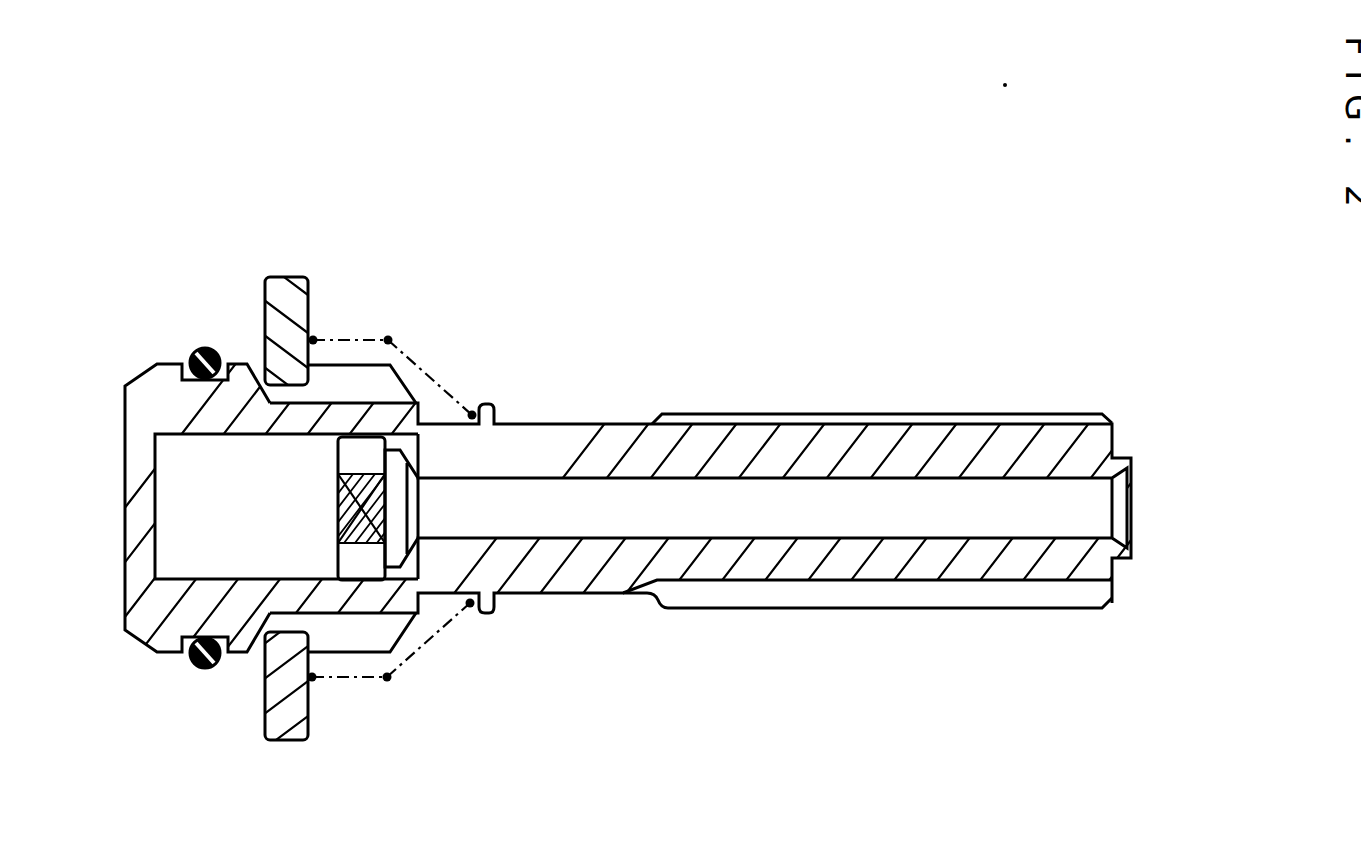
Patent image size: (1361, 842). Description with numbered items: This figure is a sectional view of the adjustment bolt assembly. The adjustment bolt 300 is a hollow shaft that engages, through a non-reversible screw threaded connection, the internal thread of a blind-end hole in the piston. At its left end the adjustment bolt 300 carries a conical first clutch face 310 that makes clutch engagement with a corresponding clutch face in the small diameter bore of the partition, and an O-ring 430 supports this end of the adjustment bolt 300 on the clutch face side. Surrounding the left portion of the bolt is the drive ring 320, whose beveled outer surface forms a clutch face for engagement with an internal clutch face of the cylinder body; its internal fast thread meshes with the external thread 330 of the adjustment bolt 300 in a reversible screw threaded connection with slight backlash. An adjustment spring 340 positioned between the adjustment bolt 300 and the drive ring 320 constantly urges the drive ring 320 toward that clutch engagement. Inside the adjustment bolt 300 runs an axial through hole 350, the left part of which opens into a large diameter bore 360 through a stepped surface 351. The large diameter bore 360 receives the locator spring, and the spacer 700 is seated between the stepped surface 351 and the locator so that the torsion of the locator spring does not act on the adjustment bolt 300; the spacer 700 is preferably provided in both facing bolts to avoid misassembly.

The adjustment bolt 300 is at (719, 655).
The first clutch face 310 is at (130, 386).
The drive ring 320 is at (273, 740).
The external thread 330 is at (386, 400).
The adjustment spring 340 is at (390, 682).
The through hole 350 is at (1004, 540).
The stepped surface 351 is at (383, 452).
The large diameter bore 360 is at (207, 579).
The O-ring 430 is at (195, 668).
The spacer 700 is at (337, 458).